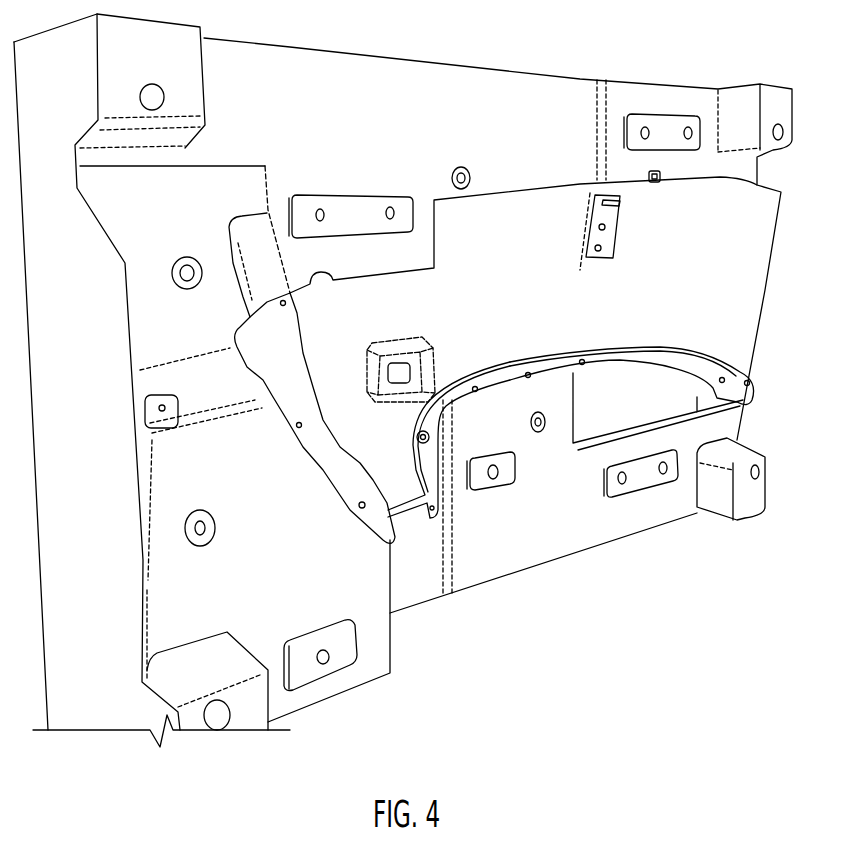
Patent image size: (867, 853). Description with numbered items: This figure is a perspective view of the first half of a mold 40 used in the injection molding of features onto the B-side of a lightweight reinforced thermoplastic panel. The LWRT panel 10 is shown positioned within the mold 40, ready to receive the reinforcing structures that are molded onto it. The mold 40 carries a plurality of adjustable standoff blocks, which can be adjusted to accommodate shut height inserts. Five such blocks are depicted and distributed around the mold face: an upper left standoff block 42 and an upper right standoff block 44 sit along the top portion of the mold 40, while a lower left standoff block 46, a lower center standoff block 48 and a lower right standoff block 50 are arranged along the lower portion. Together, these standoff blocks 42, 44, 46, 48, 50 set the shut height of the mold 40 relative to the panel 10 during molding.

The LWRT panel 10 is at (503, 220).
The mold 40 is at (405, 98).
The upper left standoff block 42 is at (317, 197).
The upper right standoff block 44 is at (662, 117).
The lower left standoff block 46 is at (328, 681).
The lower center standoff block 48 is at (500, 487).
The lower right standoff block 50 is at (645, 490).